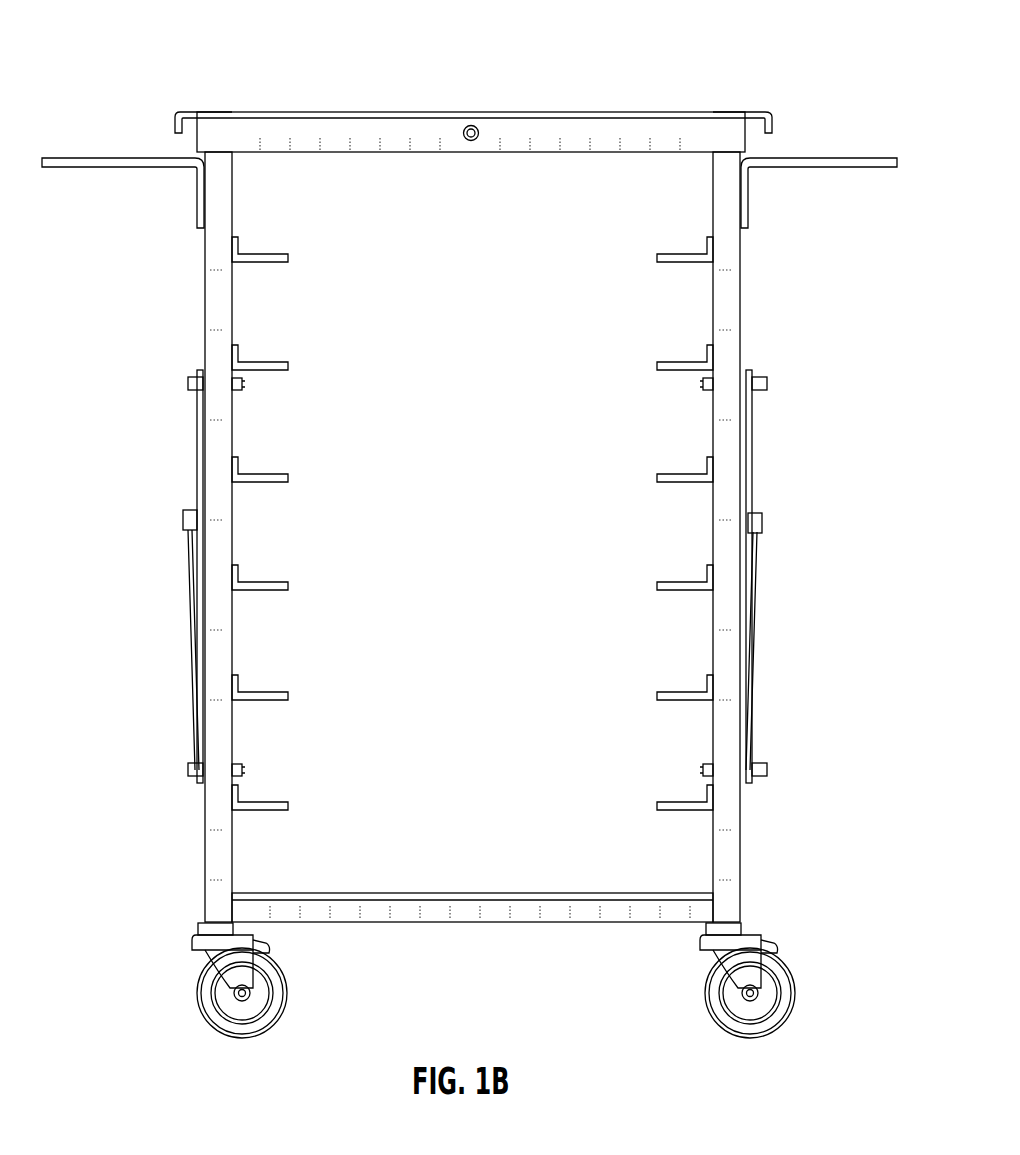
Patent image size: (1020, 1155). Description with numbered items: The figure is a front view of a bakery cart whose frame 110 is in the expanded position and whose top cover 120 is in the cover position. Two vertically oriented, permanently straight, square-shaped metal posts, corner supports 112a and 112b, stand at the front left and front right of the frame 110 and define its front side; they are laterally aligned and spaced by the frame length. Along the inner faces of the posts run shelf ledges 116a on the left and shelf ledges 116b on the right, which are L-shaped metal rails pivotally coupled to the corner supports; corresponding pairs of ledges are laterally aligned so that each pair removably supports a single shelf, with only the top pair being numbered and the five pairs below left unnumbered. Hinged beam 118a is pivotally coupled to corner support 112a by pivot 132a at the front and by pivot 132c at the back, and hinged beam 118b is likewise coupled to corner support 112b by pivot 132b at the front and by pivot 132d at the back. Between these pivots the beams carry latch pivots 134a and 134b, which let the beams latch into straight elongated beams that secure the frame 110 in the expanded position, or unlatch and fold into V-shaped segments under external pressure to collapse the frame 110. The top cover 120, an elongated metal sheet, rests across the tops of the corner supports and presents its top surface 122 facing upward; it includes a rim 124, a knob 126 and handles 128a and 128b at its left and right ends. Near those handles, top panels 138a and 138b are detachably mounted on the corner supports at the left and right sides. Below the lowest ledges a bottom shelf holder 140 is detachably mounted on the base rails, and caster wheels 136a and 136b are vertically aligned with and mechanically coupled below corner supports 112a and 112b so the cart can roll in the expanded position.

The frame 110 is at (476, 482).
The corner support 112a is at (204, 318).
The corner support 112b is at (741, 318).
The shelf ledge 116a is at (289, 260).
The shelf ledge 116b is at (656, 258).
The hinged beam 118a is at (197, 447).
The hinged beam 118b is at (753, 468).
The top cover 120 is at (379, 112).
The top surface 122 is at (534, 112).
The rim 124 is at (332, 142).
The knob 126 is at (470, 141).
The handle 128a is at (193, 110).
The handle 128b is at (739, 110).
The pivot 132a is at (188, 383).
The pivot 132b is at (764, 383).
The pivot 132c is at (188, 770).
The pivot 132d is at (764, 770).
The latch pivot 134a is at (183, 520).
The latch pivot 134b is at (763, 520).
The caster wheel 136a is at (197, 993).
The caster wheel 136b is at (797, 993).
The top panel 138a is at (44, 168).
The top panel 138b is at (895, 168).
The bottom shelf holder 140 is at (441, 893).